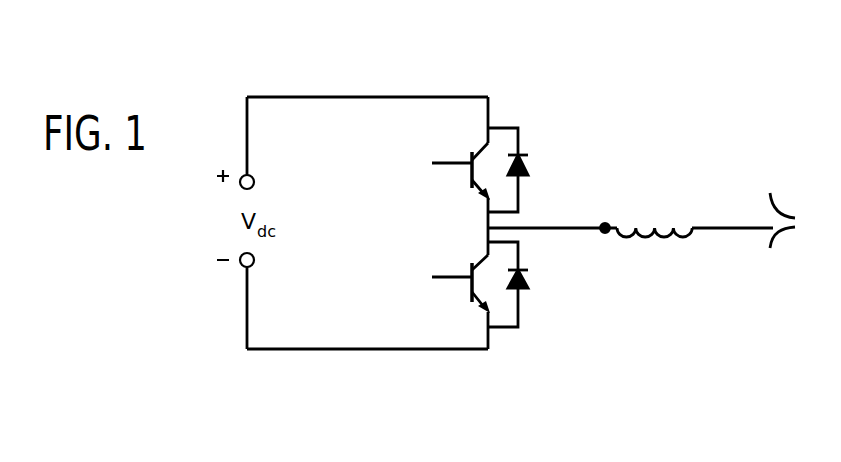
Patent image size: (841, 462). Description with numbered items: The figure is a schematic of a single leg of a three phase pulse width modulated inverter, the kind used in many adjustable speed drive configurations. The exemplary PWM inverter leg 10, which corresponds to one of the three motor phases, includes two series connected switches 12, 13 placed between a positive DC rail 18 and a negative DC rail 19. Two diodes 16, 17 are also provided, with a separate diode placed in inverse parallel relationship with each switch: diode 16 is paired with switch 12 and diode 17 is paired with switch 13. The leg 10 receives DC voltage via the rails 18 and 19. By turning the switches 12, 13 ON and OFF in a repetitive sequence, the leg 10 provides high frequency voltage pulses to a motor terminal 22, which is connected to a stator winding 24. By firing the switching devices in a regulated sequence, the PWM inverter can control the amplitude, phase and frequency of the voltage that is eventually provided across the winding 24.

The PWM inverter leg 10 is at (503, 82).
The switch 12 is at (468, 173).
The switch 13 is at (468, 294).
The diode 16 is at (530, 172).
The diode 17 is at (530, 284).
The positive DC rail 18 is at (290, 97).
The negative DC rail 19 is at (323, 349).
The motor terminal 22 is at (606, 226).
The stator winding 24 is at (662, 236).